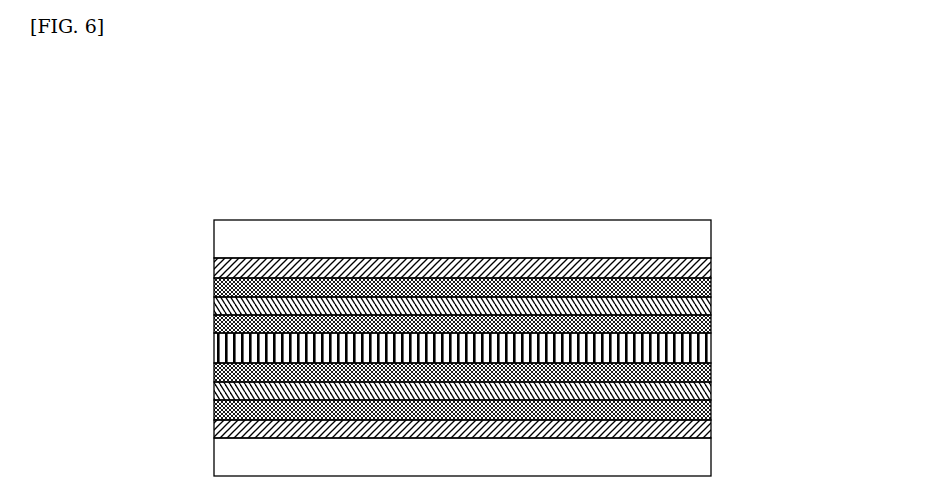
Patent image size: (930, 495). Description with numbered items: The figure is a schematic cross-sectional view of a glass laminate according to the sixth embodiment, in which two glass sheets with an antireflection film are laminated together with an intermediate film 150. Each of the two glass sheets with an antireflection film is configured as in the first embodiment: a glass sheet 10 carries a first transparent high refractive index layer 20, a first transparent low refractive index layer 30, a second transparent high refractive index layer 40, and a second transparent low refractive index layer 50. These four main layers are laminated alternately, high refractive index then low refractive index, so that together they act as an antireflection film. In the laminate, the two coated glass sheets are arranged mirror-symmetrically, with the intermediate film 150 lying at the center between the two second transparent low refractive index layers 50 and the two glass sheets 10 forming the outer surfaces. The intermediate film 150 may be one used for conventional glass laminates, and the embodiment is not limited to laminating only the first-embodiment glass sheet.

The glass sheet 10 is at (232, 237).
The first transparent high refractive index layer 20 is at (711, 258).
The first transparent low refractive index layer 30 is at (214, 297).
The second transparent high refractive index layer 40 is at (711, 297).
The second transparent low refractive index layer 50 is at (214, 336).
The intermediate film 150 is at (711, 336).